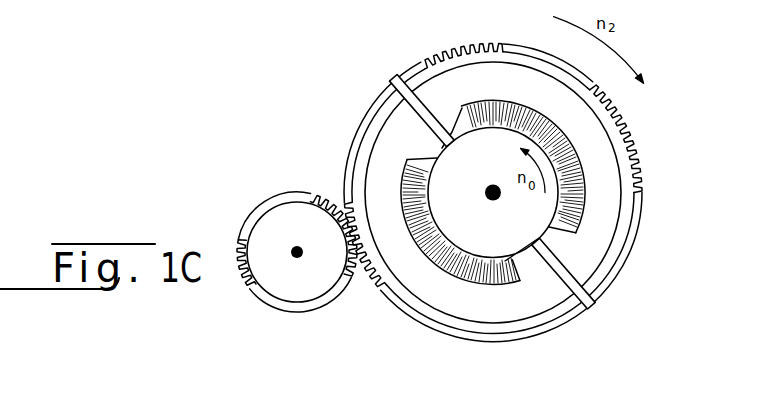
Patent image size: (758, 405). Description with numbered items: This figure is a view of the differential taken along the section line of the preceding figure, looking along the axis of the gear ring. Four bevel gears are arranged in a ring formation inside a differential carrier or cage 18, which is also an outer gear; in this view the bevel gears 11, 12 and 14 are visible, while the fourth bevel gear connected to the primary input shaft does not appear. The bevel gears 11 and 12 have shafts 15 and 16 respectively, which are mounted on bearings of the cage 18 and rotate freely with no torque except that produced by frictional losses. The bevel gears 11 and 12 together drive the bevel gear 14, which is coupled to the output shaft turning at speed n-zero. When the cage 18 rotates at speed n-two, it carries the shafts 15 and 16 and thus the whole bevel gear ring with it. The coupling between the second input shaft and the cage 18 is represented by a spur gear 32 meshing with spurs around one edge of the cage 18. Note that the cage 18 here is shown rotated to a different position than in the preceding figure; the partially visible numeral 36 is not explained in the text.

The bevel gear 11 is at (553, 240).
The bevel gear 12 is at (452, 108).
The bevel gear 14 is at (468, 243).
The shaft 15 is at (420, 122).
The shaft 16 is at (556, 276).
The differential carrier or cage 18 is at (416, 78).
The spur gear 32 is at (286, 214).
The element (partially shown) 36 is at (160, 4).